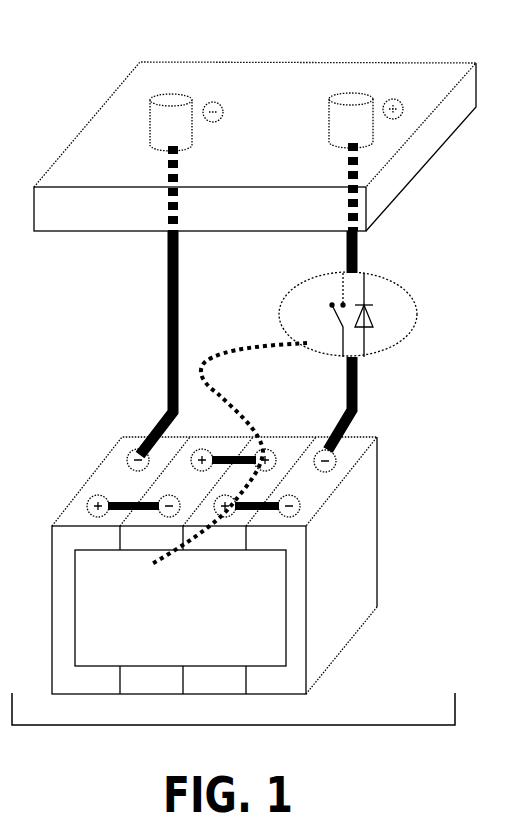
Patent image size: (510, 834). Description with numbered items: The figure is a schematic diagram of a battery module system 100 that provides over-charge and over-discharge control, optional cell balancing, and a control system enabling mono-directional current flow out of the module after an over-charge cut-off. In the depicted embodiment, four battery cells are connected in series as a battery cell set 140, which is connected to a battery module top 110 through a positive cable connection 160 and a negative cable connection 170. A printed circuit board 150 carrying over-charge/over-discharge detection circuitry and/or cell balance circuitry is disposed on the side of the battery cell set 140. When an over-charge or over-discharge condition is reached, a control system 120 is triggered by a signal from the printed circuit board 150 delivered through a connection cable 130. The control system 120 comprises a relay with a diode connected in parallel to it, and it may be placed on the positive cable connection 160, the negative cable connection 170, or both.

The battery module system 100 is at (233, 723).
The battery module top 110 is at (297, 78).
The control system 120 is at (402, 297).
The connection cable 130 is at (245, 420).
The battery cell set 140 is at (348, 557).
The printed circuit board 150 is at (243, 640).
The positive cable connection 160 is at (357, 252).
The negative cable connection 170 is at (179, 293).